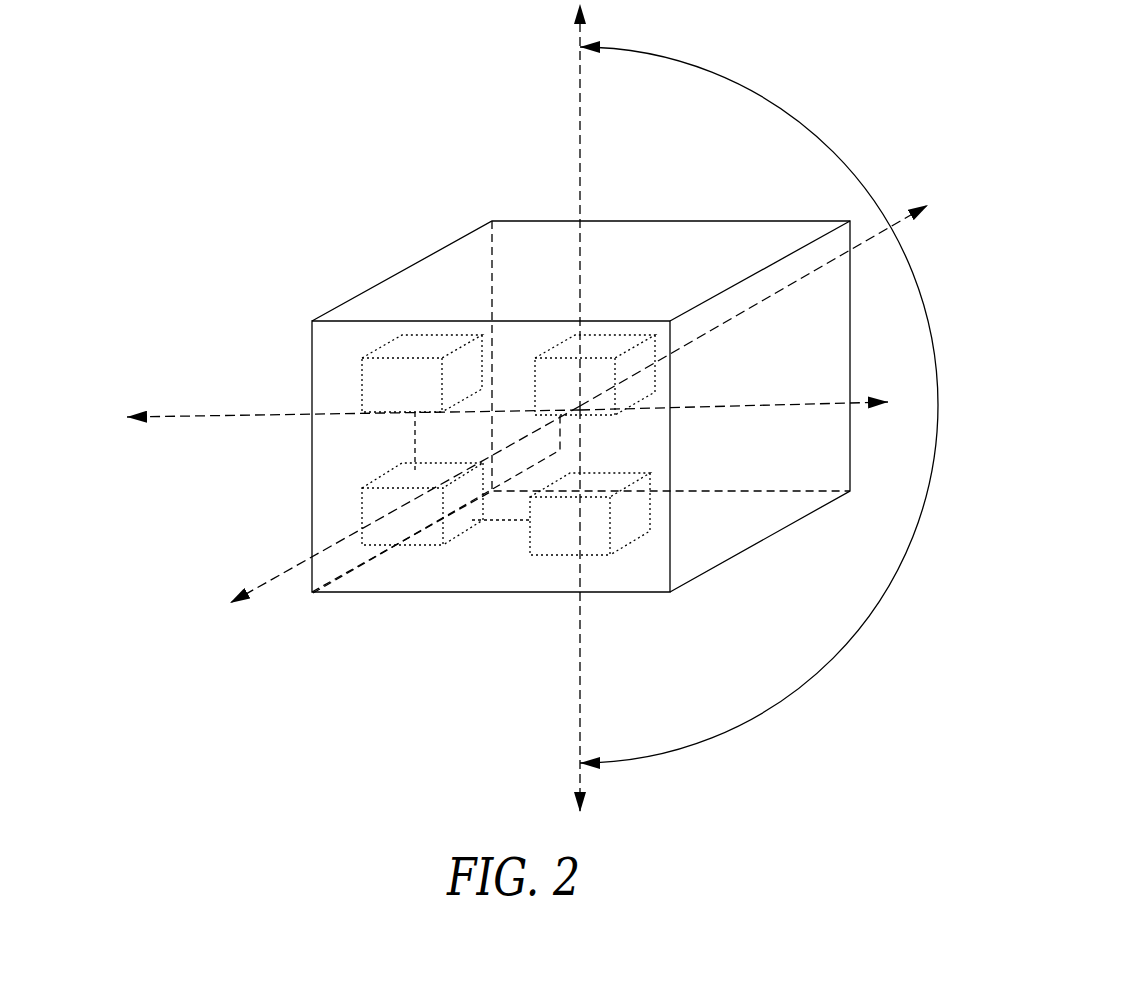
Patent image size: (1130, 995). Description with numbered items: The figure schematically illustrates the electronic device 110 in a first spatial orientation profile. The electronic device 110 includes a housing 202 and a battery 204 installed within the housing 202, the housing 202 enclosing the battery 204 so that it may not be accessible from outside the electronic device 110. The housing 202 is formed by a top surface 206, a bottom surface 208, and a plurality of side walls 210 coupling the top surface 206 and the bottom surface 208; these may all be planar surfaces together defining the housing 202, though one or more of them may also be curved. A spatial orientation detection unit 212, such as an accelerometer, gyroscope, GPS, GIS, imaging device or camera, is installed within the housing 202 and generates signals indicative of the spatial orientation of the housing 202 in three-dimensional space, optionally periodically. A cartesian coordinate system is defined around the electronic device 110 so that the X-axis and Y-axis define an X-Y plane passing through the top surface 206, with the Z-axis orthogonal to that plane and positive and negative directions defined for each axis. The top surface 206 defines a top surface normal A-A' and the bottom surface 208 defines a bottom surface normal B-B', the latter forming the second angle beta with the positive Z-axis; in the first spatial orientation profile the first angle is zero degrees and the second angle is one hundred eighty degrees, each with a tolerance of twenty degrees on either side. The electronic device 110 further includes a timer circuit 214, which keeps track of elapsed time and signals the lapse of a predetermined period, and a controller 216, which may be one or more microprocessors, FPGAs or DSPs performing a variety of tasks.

The electronic device 110 is at (986, 131).
The housing 202 is at (853, 490).
The battery 204 is at (418, 350).
The top surface 206 is at (797, 225).
The bottom surface 208 is at (497, 584).
The side walls 210 is at (798, 368).
The spatial orientation detection unit 212 is at (622, 336).
The timer circuit 214 is at (637, 544).
The controller 216 is at (430, 544).